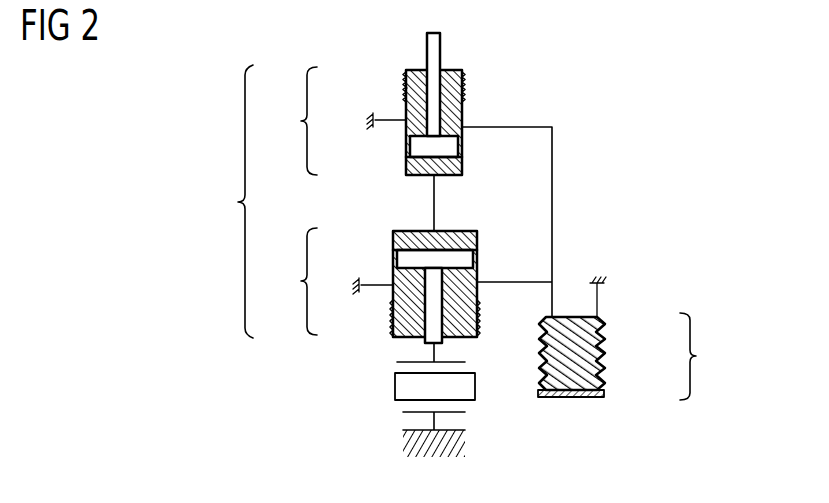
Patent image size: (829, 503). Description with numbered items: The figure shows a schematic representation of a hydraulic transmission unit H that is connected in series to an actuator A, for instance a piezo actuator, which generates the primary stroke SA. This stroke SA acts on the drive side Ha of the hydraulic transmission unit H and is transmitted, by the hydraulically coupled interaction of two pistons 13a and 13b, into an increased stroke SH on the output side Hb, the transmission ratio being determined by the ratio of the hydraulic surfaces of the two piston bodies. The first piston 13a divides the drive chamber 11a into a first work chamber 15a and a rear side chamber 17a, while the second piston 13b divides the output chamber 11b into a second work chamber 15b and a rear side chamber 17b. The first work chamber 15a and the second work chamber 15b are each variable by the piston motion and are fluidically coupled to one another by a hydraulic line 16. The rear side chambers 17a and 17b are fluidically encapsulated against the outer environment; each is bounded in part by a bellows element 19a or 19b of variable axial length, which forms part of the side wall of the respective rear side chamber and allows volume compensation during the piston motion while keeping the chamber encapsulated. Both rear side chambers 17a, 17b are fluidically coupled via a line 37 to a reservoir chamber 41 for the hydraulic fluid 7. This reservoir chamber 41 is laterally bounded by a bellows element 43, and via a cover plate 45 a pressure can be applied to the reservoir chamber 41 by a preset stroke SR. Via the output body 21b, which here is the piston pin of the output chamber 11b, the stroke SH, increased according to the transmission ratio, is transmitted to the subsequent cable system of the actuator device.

The hydraulic fluid 7 is at (541, 360).
The drive chamber 11a is at (402, 297).
The output chamber 11b is at (396, 106).
The first piston 13a is at (393, 259).
The second piston 13b is at (410, 143).
The first work chamber 15a is at (477, 238).
The second work chamber 15b is at (462, 170).
The hydraulic line 16 is at (434, 204).
The rear side chamber 17a is at (477, 303).
The rear side chamber 17b is at (462, 113).
The bellows element 19a is at (393, 318).
The bellows element 19b is at (406, 92).
The output body 21b is at (440, 58).
The line 37 is at (552, 196).
The reservoir chamber 41 is at (613, 373).
The bellows element 43 is at (603, 357).
The cover plate 45 is at (568, 398).
The actuator A is at (395, 390).
The hydraulic transmission unit H is at (236, 201).
The drive side Ha is at (253, 343).
The output side Hb is at (254, 61).
The stroke on the output side SH is at (406, 72).
The stroke of the actuator SA is at (397, 362).
The preset stroke SR is at (604, 392).